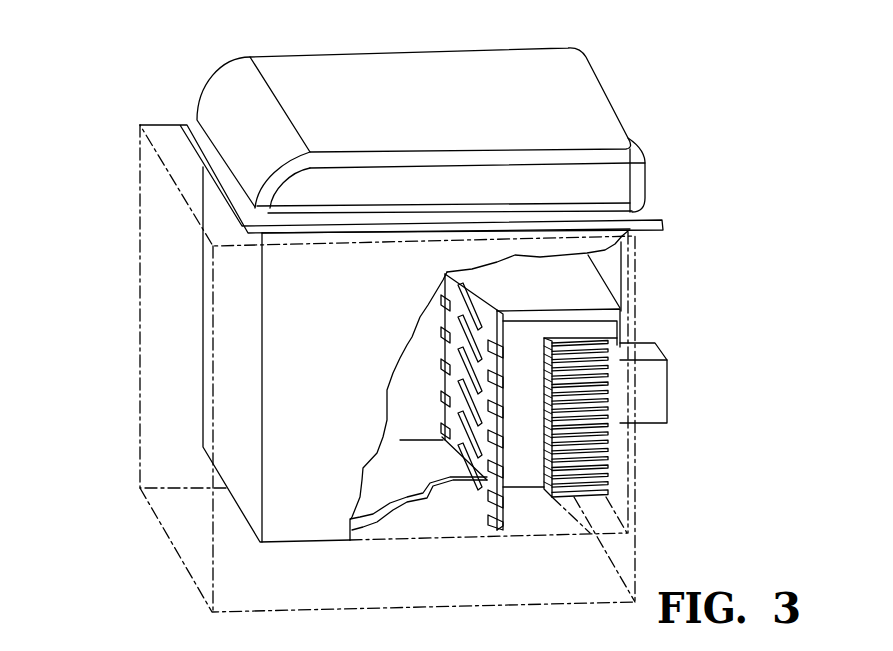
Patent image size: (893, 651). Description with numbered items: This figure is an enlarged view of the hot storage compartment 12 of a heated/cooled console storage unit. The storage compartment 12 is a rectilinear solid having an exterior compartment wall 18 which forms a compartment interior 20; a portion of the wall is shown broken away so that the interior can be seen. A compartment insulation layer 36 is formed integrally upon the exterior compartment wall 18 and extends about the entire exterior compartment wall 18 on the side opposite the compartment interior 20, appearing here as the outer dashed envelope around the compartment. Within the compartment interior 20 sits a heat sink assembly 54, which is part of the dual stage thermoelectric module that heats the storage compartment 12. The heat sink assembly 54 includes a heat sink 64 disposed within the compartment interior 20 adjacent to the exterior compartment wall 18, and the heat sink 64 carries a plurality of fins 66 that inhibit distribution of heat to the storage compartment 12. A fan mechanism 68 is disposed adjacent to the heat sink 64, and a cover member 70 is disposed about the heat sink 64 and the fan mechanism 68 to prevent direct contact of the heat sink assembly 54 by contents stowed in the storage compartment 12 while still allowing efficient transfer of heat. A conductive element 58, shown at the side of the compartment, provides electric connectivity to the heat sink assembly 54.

The storage compartment 12 is at (179, 55).
The exterior compartment wall 18 is at (235, 303).
The compartment interior 20 is at (393, 473).
The compartment insulation layer 36 is at (175, 405).
The heat sink assembly 54 is at (486, 479).
The conductive element 58 is at (654, 344).
The heat sink 64 is at (598, 472).
The fins 66 is at (597, 388).
The fan mechanism 68 is at (517, 473).
The cover member 70 is at (592, 292).